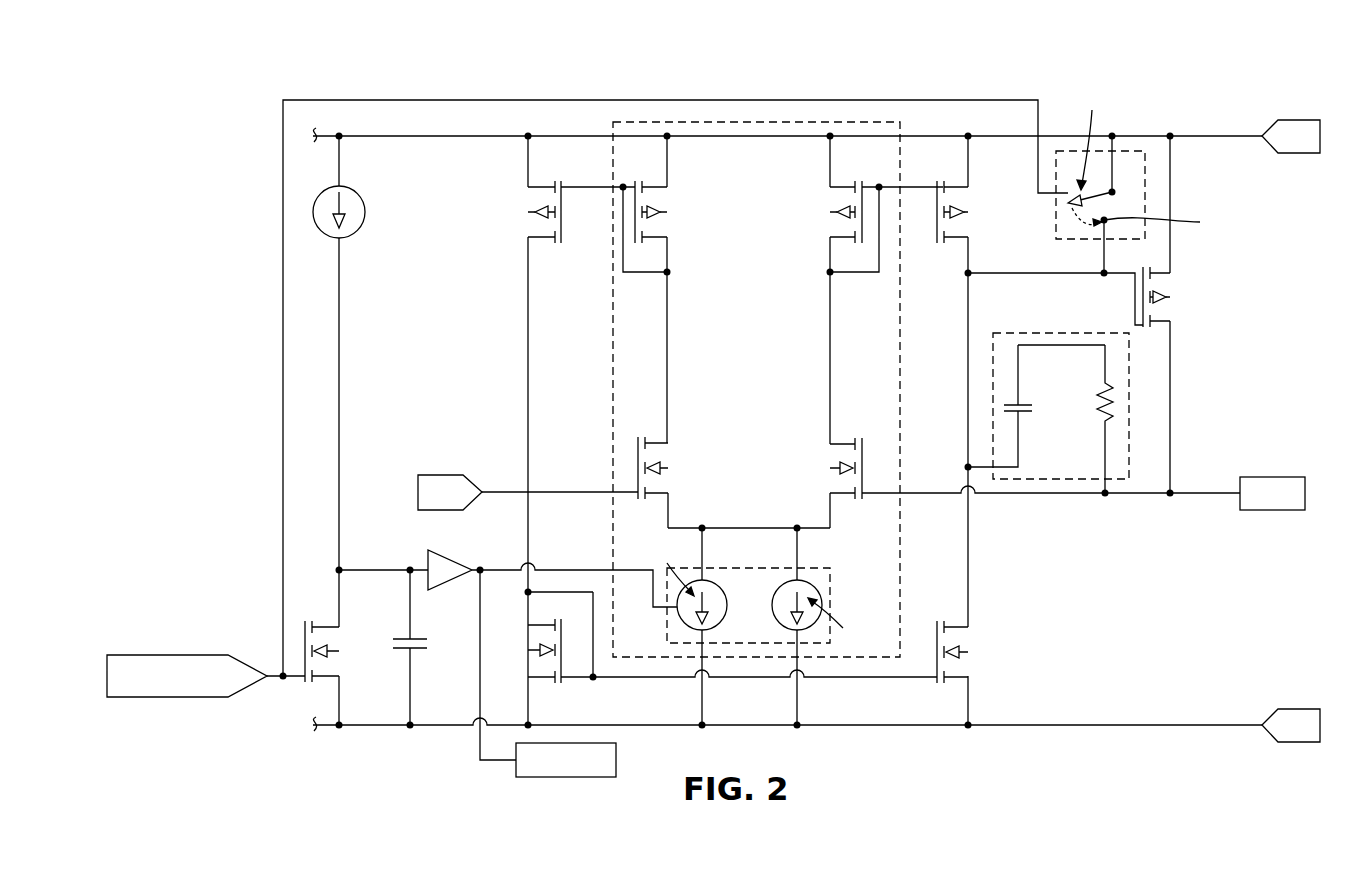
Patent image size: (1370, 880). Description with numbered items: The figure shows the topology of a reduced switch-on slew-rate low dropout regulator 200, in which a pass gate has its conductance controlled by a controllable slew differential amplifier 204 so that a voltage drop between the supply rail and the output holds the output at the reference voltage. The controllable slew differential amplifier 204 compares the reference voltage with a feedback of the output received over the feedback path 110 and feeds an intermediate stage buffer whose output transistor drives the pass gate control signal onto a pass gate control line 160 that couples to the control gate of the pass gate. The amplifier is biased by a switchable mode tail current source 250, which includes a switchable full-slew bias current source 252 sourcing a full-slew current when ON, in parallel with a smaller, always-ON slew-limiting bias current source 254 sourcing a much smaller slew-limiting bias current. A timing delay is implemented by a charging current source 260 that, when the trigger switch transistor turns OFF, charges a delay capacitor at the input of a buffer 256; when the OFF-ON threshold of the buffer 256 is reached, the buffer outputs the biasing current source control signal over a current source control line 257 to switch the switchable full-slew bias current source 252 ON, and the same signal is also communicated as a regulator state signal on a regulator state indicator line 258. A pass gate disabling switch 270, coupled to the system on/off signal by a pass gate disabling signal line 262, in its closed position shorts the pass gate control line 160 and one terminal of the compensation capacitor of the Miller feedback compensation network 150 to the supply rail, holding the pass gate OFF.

The reduced SSR LDO regulator 200 is at (186, 122).
The pass gate disabling signal line 262 is at (432, 100).
The controllable slew differential amplifier 204 is at (880, 122).
The charging current source 260 is at (362, 200).
The pass gate disabling switch 270 is at (1145, 185).
The pass gate control line 160 is at (990, 273).
The Miller feedback compensation network 150 is at (1005, 333).
The feedback path 110 is at (1030, 493).
The buffer 256 is at (468, 556).
The current source control line 257 is at (545, 568).
The switchable full-slew bias current source 252 is at (717, 586).
The switchable mode tail current source 250 is at (823, 568).
The slew-limiting bias current source 254 is at (815, 588).
The regulator state indicator line 258 is at (480, 750).